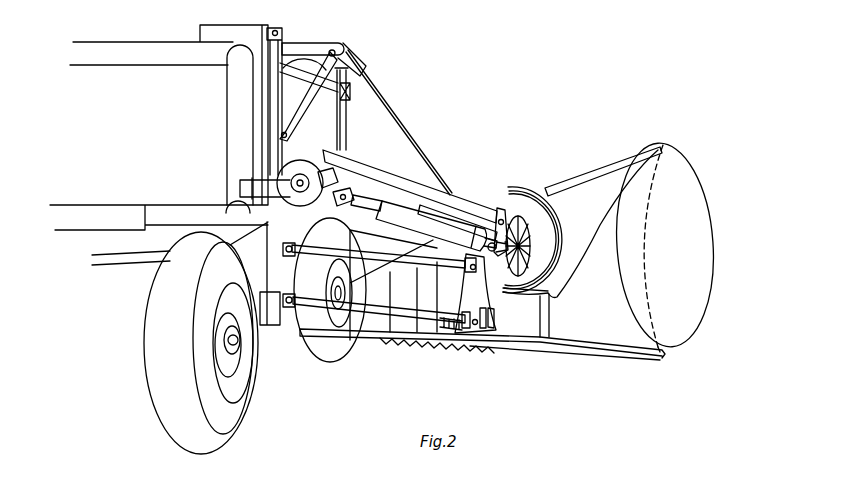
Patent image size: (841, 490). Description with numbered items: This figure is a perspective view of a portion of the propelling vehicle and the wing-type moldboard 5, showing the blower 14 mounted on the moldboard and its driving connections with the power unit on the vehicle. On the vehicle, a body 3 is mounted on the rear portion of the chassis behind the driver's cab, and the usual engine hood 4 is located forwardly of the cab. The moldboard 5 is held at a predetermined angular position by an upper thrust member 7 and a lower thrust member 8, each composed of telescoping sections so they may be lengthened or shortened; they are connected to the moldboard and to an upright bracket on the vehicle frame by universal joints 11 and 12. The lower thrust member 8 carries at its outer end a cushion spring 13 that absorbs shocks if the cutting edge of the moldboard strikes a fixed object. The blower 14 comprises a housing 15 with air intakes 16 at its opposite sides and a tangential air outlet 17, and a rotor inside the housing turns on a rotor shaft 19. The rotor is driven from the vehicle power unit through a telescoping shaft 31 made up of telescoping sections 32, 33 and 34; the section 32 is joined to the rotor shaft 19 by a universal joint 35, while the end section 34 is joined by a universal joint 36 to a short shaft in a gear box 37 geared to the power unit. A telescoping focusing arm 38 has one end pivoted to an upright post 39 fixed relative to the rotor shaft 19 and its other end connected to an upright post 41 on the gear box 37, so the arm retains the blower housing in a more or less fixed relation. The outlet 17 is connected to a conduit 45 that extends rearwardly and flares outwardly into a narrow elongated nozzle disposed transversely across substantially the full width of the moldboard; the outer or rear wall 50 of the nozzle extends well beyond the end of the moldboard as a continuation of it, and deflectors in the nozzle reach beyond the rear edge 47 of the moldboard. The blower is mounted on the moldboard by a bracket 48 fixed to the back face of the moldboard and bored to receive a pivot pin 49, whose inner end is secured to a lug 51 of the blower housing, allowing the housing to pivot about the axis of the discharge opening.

The body 3 is at (90, 222).
The engine hood 4 is at (288, 75).
The wing-type moldboard 5 is at (544, 357).
The thrust member 7 is at (380, 258).
The lower thrust member 8 is at (367, 307).
The universal joint 11 is at (468, 316).
The universal joint 12 is at (297, 297).
The cushion spring 13 is at (452, 327).
The blower 14 is at (550, 181).
The blower housing 15 is at (537, 212).
The air intakes 16 is at (530, 237).
The tangential exhaust or air outlet 17 is at (545, 337).
The rotor shaft 19 is at (262, 138).
The telescoping shaft 31 is at (435, 206).
The shaft section 32 is at (445, 228).
The shaft section 33 is at (395, 215).
The end shaft section 34 is at (372, 205).
The universal joint 35 is at (497, 222).
The universal joint 36 is at (328, 210).
The gear box 37 is at (305, 173).
The telescoping focusing arm 38 is at (381, 167).
The upright post 39 is at (167, 45).
The upright post 41 is at (322, 143).
The conduit 45 is at (570, 320).
The rear edge of the moldboard 47 is at (645, 218).
The bracket 48 is at (483, 330).
The pivot pin 49 is at (478, 310).
The outer or rear wall of the nozzle 50 is at (702, 245).
The lug or fixed portion 51 is at (495, 320).